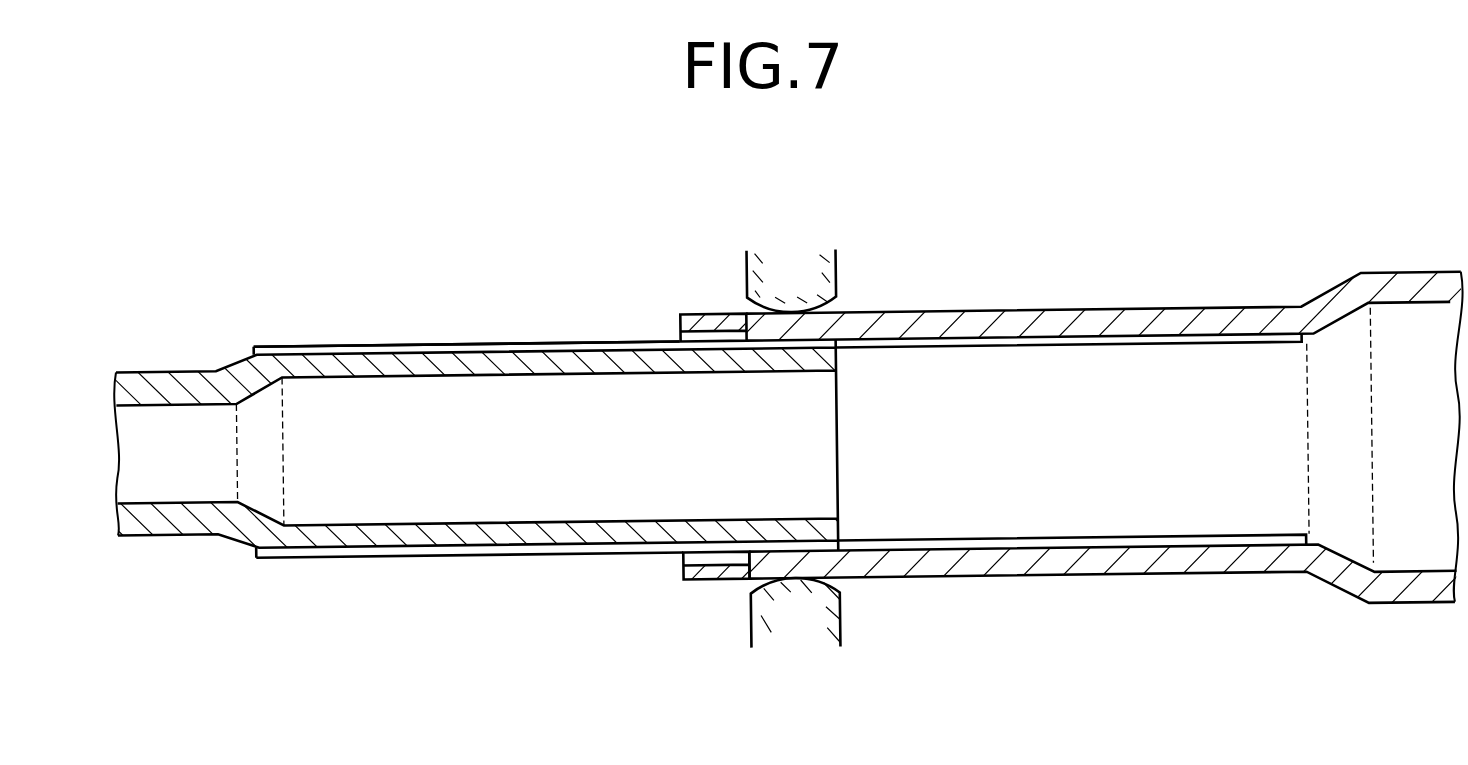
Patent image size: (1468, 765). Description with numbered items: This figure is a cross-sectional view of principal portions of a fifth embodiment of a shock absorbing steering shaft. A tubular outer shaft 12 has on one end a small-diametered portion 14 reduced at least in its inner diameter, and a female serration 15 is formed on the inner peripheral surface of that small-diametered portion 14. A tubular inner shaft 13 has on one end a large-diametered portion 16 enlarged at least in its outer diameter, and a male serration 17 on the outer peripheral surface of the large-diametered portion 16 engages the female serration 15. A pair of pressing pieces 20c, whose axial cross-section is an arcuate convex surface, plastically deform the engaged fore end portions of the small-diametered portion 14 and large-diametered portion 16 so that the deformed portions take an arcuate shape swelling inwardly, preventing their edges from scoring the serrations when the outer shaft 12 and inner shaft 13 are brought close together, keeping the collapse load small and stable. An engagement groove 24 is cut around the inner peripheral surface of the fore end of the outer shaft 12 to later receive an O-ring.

The tubular outer shaft 12 is at (1127, 308).
The tubular inner shaft 13 is at (392, 553).
The small-diametered portion 14 is at (1050, 570).
The female serration 15 is at (1172, 535).
The large-diametered portion 16 is at (442, 350).
The male serration 17 is at (307, 347).
The pressing pieces 20c is at (815, 272).
The engagement groove 24 is at (681, 330).